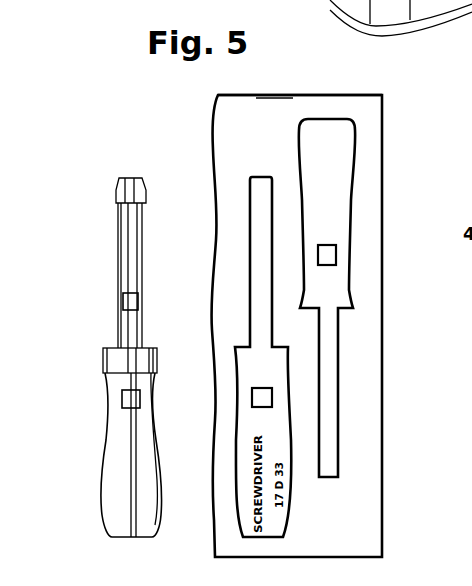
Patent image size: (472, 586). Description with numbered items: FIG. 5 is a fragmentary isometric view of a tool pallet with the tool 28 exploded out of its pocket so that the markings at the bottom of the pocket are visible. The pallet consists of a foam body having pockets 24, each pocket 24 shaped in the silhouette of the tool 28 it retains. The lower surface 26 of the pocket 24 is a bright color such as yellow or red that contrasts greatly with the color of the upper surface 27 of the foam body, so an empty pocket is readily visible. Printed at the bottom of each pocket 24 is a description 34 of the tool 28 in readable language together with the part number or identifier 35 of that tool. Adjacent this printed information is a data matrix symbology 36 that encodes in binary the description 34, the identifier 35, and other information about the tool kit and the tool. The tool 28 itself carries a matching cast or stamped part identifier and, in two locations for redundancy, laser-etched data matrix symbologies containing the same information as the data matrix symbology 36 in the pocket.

The pocket 24 is at (352, 295).
The lower surface of the pocket 26 is at (330, 231).
The upper surface of the foam body 27 is at (384, 101).
The tool 28 is at (157, 477).
The description of the tool 34 is at (235, 96).
The part number or identifying symbol 35 is at (348, 118).
The data matrix symbology 36 is at (139, 301).